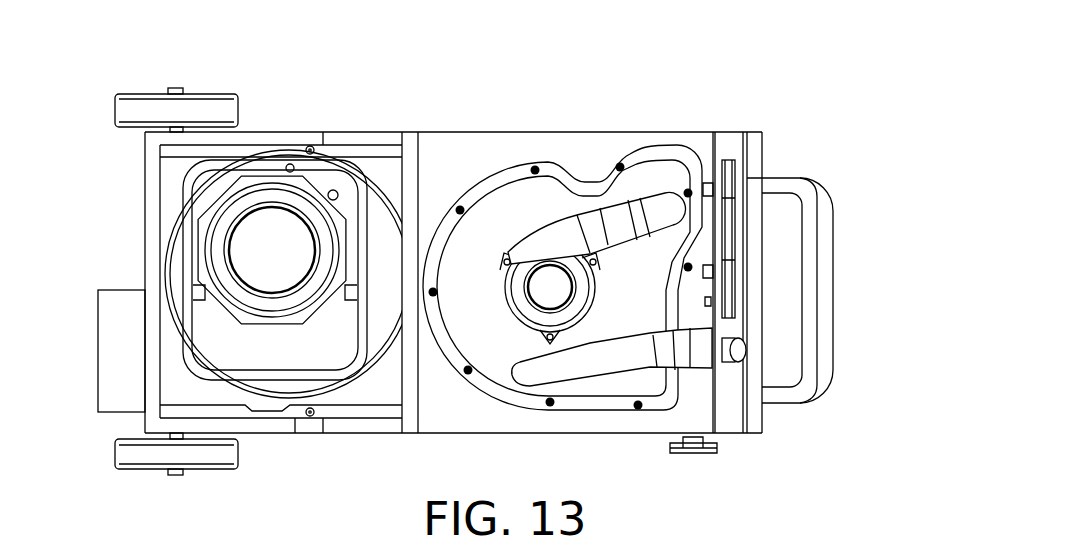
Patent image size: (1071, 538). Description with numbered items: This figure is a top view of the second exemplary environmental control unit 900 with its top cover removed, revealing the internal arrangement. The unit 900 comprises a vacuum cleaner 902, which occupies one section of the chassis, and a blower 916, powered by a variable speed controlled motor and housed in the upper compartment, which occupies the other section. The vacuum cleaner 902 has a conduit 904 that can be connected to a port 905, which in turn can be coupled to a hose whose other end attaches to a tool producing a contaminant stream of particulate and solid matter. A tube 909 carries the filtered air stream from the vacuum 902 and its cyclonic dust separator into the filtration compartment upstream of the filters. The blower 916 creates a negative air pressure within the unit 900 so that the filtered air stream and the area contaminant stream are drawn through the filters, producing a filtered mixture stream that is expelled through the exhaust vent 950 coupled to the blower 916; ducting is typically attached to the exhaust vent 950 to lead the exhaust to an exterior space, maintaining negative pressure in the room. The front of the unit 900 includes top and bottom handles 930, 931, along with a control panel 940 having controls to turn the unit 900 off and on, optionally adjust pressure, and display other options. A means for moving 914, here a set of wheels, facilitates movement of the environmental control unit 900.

The environmental control unit 900 is at (660, 79).
The vacuum cleaner 902 is at (555, 291).
The conduit 904 is at (630, 362).
The port 905 is at (742, 352).
The tube 909 is at (665, 203).
The means for moving 914 is at (207, 92).
The blower 916 is at (285, 252).
The top handle 930 is at (799, 407).
The bottom handle 931 is at (827, 295).
The control panel 940 is at (732, 198).
The exhaust vent 950 is at (125, 295).